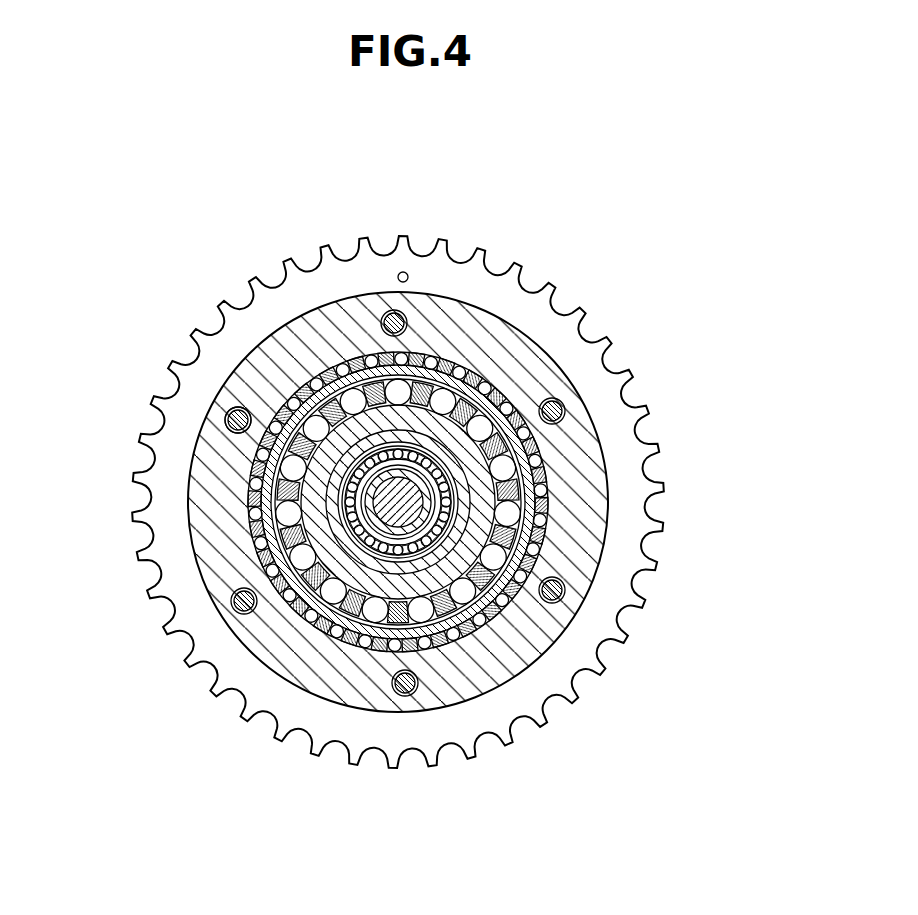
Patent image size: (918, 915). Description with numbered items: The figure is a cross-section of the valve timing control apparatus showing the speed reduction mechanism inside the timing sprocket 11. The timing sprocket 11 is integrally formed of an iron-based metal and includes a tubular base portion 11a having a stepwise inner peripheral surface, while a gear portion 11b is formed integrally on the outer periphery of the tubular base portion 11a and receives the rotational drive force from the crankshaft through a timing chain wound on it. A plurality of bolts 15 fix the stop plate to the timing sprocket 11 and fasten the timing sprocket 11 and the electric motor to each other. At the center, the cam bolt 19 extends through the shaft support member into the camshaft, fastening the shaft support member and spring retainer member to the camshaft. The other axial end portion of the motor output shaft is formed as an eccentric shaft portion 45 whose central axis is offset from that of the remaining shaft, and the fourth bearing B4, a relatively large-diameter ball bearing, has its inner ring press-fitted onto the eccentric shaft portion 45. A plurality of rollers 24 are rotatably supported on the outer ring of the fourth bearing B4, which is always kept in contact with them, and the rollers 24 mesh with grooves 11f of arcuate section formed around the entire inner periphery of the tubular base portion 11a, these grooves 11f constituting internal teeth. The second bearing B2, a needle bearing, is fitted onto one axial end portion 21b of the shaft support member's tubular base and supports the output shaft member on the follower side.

The timing sprocket 11 is at (431, 506).
The tubular base portion 11a is at (606, 444).
The gear portion 11b is at (667, 568).
The grooves 11f is at (353, 363).
The bolts 15 is at (403, 318).
The cam bolt 19 is at (405, 515).
The one axial end portion 21b is at (347, 525).
The rollers 24 is at (338, 640).
The eccentric shaft portion 45 is at (220, 410).
The second bearing B2 is at (249, 530).
The fourth bearing B4 is at (482, 604).